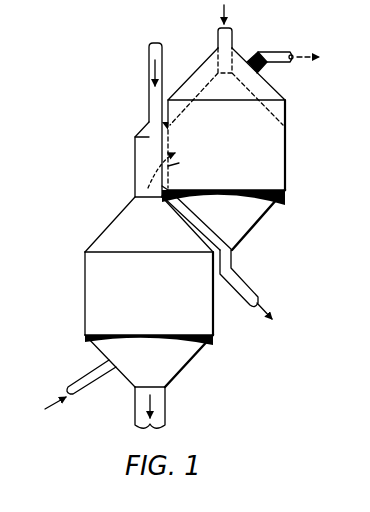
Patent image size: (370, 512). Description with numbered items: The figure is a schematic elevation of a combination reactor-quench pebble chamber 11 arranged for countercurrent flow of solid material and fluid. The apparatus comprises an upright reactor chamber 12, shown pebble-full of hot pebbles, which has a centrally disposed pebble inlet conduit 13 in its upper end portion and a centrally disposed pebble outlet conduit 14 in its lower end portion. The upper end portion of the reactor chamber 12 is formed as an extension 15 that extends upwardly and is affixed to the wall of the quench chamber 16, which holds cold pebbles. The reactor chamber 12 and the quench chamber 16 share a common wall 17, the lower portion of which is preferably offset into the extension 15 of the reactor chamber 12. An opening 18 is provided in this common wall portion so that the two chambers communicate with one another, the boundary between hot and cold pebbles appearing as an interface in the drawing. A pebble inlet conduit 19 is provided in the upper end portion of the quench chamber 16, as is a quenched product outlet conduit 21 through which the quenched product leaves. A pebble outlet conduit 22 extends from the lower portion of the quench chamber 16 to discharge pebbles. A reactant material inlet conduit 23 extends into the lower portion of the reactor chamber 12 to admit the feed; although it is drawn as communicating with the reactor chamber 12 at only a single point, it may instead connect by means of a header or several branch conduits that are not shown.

The combination reactor-quench pebble chamber 11 is at (128, 209).
The upright reactor chamber 12 is at (102, 234).
The pebble inlet conduit 13 is at (149, 102).
The pebble outlet conduit 14 is at (166, 402).
The extension 15 is at (135, 154).
The quench chamber 16 is at (286, 168).
The common wall 17 is at (162, 187).
The opening 18 is at (168, 147).
The pebble inlet conduit 19 is at (232, 47).
The quenched product outlet conduit 21 is at (276, 63).
The pebble outlet conduit 22 is at (232, 264).
The reactant material inlet conduit 23 is at (90, 383).